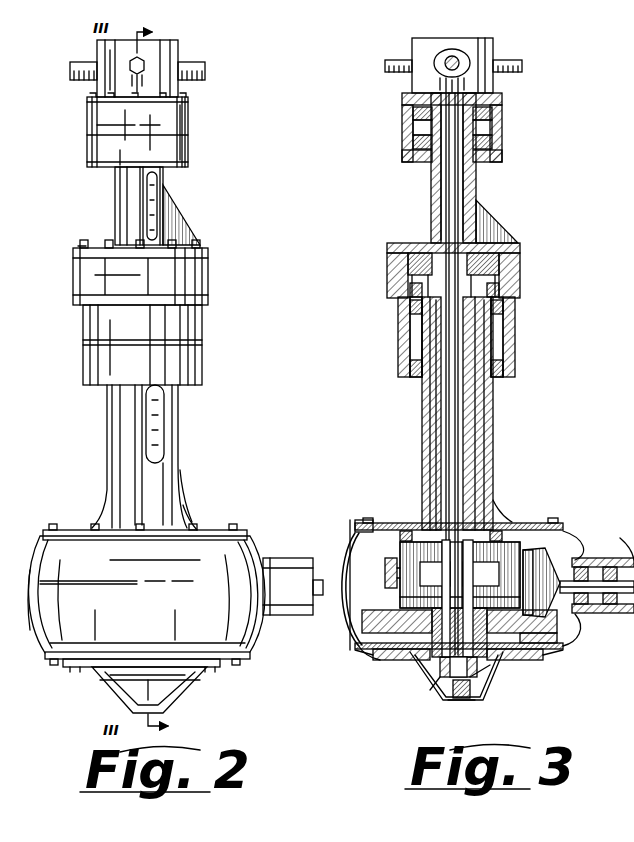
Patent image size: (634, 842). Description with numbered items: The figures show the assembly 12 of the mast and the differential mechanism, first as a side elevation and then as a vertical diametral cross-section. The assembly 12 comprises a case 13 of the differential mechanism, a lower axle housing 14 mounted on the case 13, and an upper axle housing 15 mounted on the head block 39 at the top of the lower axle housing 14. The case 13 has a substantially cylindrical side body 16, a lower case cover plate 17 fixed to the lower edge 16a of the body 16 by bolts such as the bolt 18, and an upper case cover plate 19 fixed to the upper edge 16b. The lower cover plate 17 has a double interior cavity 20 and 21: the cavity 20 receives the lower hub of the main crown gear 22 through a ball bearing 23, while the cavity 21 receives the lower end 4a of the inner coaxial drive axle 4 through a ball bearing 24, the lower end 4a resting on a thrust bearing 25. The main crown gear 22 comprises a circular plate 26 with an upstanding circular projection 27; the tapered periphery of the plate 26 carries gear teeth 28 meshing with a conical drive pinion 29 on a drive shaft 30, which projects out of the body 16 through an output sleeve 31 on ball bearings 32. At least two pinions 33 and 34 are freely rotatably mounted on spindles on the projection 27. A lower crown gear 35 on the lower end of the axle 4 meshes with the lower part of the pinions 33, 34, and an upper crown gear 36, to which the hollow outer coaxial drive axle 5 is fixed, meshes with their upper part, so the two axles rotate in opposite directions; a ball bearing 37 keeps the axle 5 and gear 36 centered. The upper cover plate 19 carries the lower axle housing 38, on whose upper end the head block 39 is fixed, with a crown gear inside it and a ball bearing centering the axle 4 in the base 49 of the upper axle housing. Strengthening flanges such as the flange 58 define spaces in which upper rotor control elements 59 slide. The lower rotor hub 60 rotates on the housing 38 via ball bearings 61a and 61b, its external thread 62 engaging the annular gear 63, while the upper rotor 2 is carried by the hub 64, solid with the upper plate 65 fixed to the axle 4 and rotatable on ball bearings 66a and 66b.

In FIG. 2, the upper rotor 2 is at (75, 80).
In FIG. 3, the upper rotor 2 is at (391, 79).
In FIG. 3, the inner coaxial drive axle 4 is at (459, 479).
In FIG. 3, the lower end of inner coaxial drive axle 4a is at (485, 682).
In FIG. 3, the outer coaxial drive axle 5 is at (481, 418).
In FIG. 2, the assembly 12 is at (70, 326).
In FIG. 3, the assembly 12 is at (531, 337).
In FIG. 2, the case 13 is at (262, 650).
In FIG. 3, the case 13 is at (360, 663).
In FIG. 2, the lower axle housing 14 is at (100, 446).
In FIG. 3, the lower axle housing 14 is at (410, 419).
In FIG. 2, the upper axle housing 15 is at (86, 196).
In FIG. 3, the upper axle housing 15 is at (414, 186).
In FIG. 2, the side body 16 is at (27, 598).
In FIG. 3, the side body 16 is at (338, 577).
In FIG. 3, the lower edge of body 16a is at (385, 652).
In FIG. 3, the upper edge of body 16b is at (357, 530).
In FIG. 2, the lower case cover plate 17 is at (78, 667).
In FIG. 3, the lower case cover plate 17 is at (546, 662).
In FIG. 2, the bolt 18 is at (240, 657).
In FIG. 3, the bolt 18 is at (556, 645).
In FIG. 2, the upper case cover plate 19 is at (214, 525).
In FIG. 3, the upper case cover plate 19 is at (508, 520).
In FIG. 2, the cavity 20 is at (110, 684).
In FIG. 3, the cavity 20 is at (515, 660).
In FIG. 2, the cavity 21 is at (180, 690).
In FIG. 3, the main crown gear 22 is at (410, 690).
In FIG. 3, the ball bearing 23 is at (428, 692).
In FIG. 3, the ball bearing 24 is at (452, 702).
In FIG. 3, the thrust bearing 25 is at (472, 700).
In FIG. 3, the circular plate 26 is at (537, 656).
In FIG. 3, the circular projection 27 is at (347, 626).
In FIG. 3, the gear teeth 28 is at (368, 647).
In FIG. 3, the conical drive pinion 29 is at (627, 539).
In FIG. 2, the drive shaft 30 is at (318, 566).
In FIG. 3, the drive shaft 30 is at (610, 559).
In FIG. 2, the output sleeve 31 is at (290, 546).
In FIG. 3, the ball bearing 32 is at (578, 596).
In FIG. 3, the pinion 33 is at (398, 530).
In FIG. 3, the pinion 34 is at (547, 546).
In FIG. 3, the lower crown gear 35 is at (435, 574).
In FIG. 3, the upper crown gear 36 is at (540, 523).
In FIG. 3, the ball bearing 37 is at (516, 522).
In FIG. 3, the lower axle housing 38 is at (434, 469).
In FIG. 3, the head block 39 is at (520, 266).
In FIG. 2, the base 49 is at (208, 252).
In FIG. 2, the strengthening flange 58 is at (186, 508).
In FIG. 2, the upper rotor control element 59 is at (155, 200).
In FIG. 2, the hub 60 is at (92, 366).
In FIG. 3, the hub 60 is at (516, 316).
In FIG. 3, the ball bearing 61a is at (401, 365).
In FIG. 3, the ball bearing 61b is at (400, 311).
In FIG. 3, the external thread 62 is at (397, 284).
In FIG. 3, the annular gear 63 is at (392, 263).
In FIG. 2, the hub 64 is at (87, 143).
In FIG. 3, the hub 64 is at (402, 133).
In FIG. 2, the upper disc-shaped plate 65 is at (88, 108).
In FIG. 3, the upper disc-shaped plate 65 is at (402, 103).
In FIG. 3, the ball bearing 66a is at (505, 117).
In FIG. 3, the ball bearing 66b is at (505, 147).